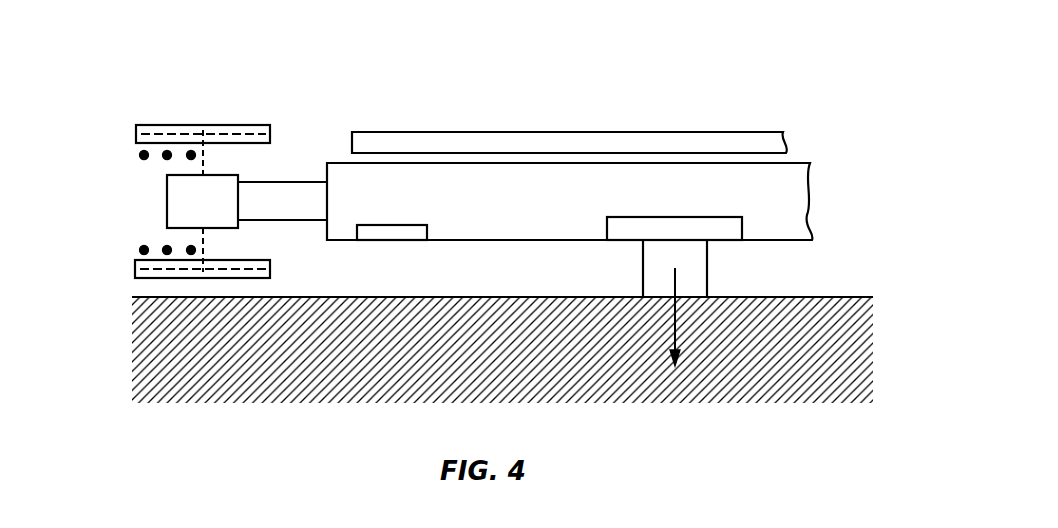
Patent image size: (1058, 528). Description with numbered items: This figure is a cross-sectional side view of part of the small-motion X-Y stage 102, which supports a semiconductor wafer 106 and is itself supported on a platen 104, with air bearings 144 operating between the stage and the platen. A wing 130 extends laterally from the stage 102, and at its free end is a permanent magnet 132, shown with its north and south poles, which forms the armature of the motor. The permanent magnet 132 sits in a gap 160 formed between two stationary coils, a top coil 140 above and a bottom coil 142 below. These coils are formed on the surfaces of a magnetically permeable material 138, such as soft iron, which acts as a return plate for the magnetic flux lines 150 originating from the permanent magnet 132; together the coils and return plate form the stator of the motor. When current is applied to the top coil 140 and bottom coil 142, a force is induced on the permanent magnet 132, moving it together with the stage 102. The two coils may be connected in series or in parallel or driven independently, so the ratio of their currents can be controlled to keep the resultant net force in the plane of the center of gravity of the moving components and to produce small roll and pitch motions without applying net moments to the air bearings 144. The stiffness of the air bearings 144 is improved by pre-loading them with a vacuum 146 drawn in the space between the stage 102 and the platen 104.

The small-motion X-Y stage 102 is at (788, 187).
The platen 104 is at (860, 347).
The semiconductor wafer 106 is at (773, 143).
The wing 130 is at (270, 181).
The permanent magnet 132 is at (165, 195).
The magnetically permeable material 138 is at (138, 126).
The top coil 140 is at (140, 160).
The bottom coil 142 is at (140, 250).
The air bearing 144 is at (380, 233).
The vacuum 146 is at (702, 317).
The magnetic flux lines 150 is at (207, 148).
The gap 160 is at (183, 168).